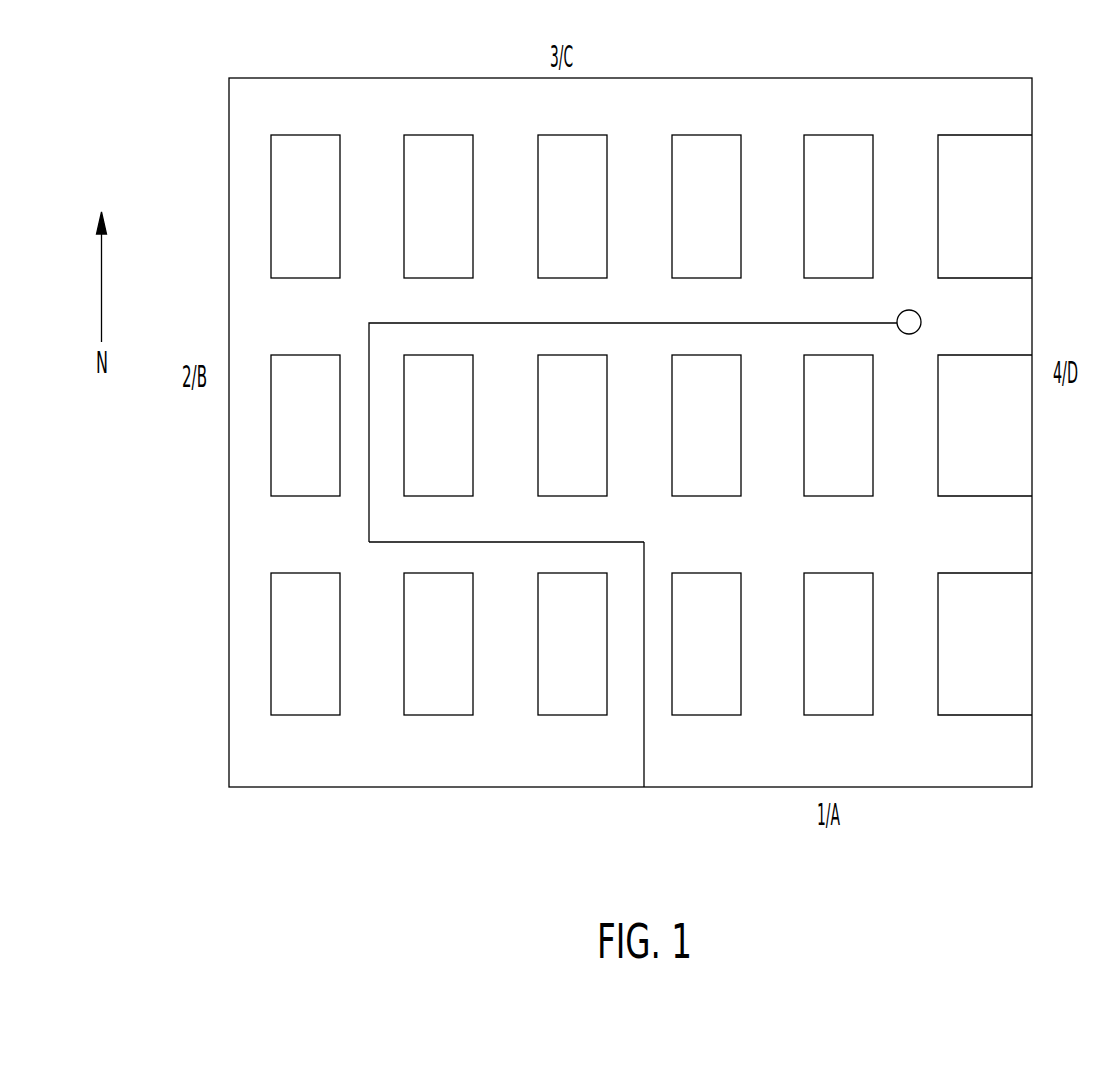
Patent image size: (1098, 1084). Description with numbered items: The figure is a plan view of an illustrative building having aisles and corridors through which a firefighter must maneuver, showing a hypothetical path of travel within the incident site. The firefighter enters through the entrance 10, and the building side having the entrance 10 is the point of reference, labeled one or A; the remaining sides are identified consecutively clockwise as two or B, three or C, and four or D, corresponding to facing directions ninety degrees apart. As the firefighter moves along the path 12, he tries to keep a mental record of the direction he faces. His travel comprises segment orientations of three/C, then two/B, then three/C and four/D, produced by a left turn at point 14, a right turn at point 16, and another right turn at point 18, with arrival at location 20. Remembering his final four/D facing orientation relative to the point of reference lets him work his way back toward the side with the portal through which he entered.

The entrance 10 is at (527, 788).
The path 12 is at (705, 665).
The point 14 is at (644, 542).
The point 16 is at (369, 542).
The point 18 is at (369, 323).
The location 20 is at (921, 323).